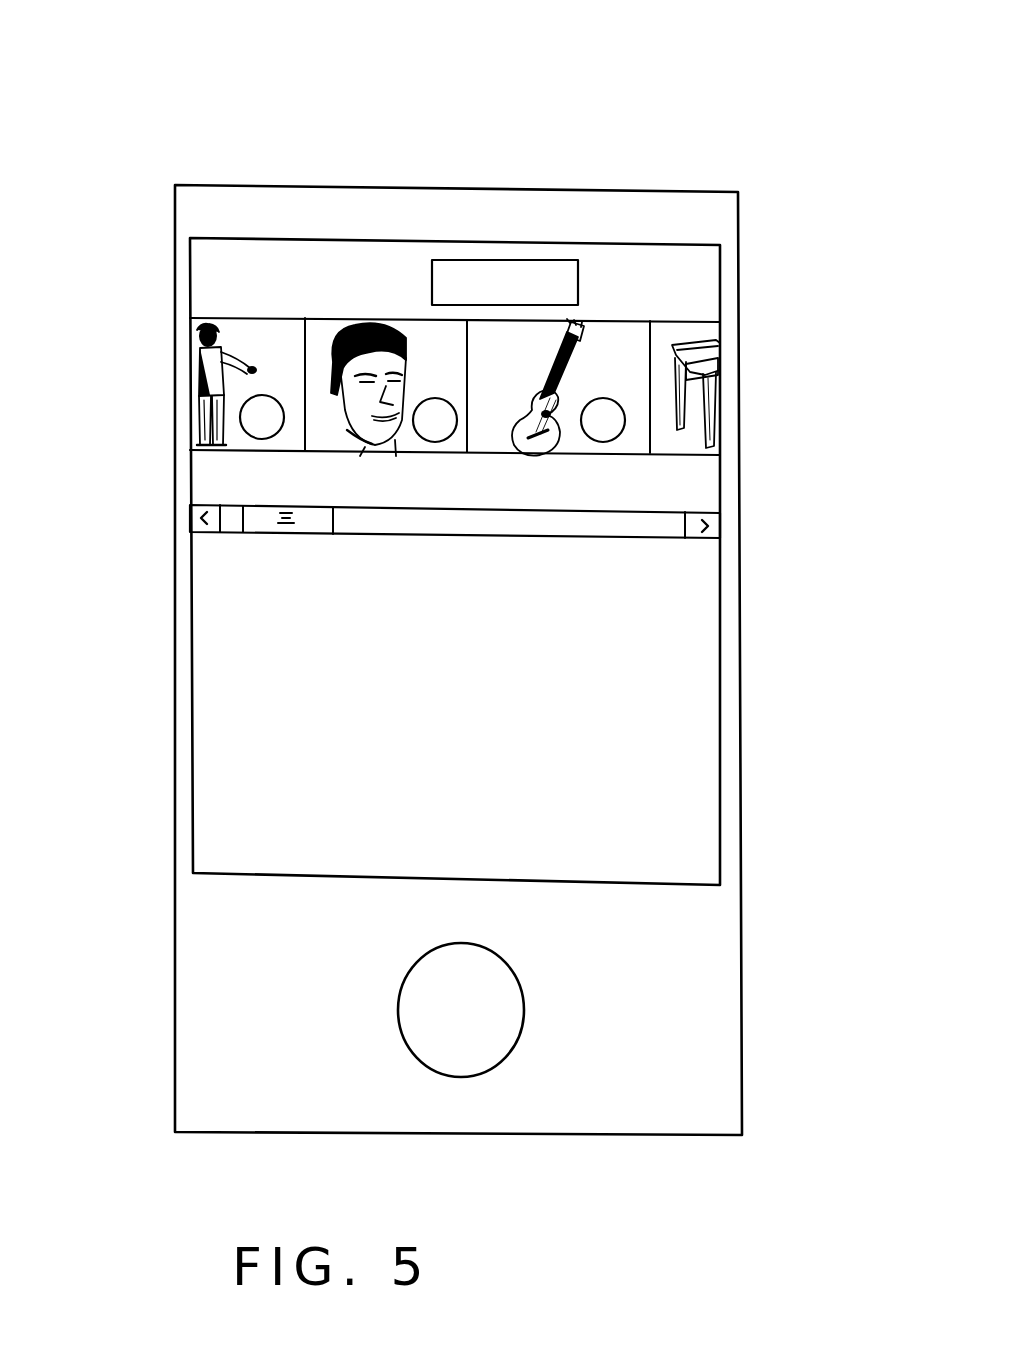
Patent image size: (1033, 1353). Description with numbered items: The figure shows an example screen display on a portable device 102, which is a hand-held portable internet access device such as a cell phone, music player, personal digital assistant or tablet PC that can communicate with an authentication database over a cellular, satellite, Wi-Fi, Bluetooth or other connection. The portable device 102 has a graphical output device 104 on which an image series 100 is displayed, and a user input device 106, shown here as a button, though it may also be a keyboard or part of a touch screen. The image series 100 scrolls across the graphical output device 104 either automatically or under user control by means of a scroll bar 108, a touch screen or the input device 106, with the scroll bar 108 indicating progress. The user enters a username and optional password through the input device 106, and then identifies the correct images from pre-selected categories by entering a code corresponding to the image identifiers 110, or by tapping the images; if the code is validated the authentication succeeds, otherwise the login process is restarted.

The image series 100 is at (485, 543).
The portable device 102 is at (294, 116).
The graphical output device 104 is at (687, 638).
The user input device 106 is at (485, 1028).
The scroll bar 108 is at (660, 525).
The image identifiers 110 is at (248, 430).